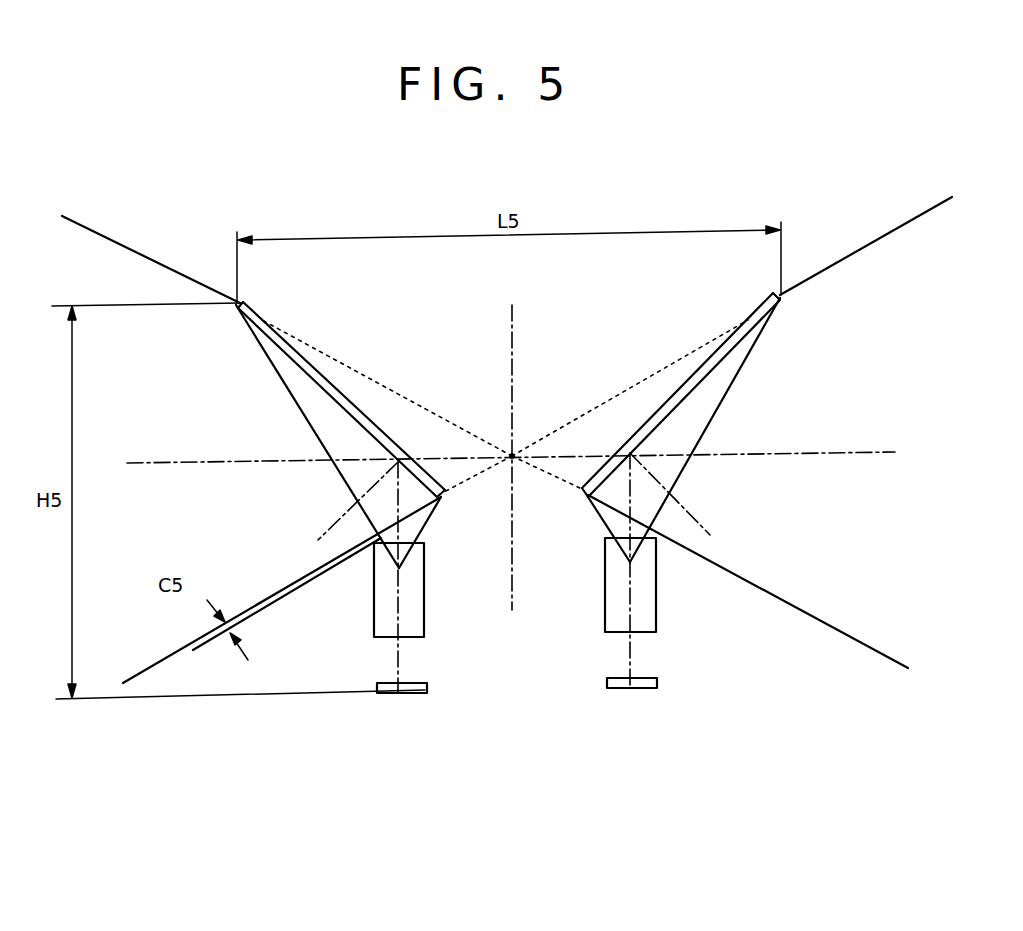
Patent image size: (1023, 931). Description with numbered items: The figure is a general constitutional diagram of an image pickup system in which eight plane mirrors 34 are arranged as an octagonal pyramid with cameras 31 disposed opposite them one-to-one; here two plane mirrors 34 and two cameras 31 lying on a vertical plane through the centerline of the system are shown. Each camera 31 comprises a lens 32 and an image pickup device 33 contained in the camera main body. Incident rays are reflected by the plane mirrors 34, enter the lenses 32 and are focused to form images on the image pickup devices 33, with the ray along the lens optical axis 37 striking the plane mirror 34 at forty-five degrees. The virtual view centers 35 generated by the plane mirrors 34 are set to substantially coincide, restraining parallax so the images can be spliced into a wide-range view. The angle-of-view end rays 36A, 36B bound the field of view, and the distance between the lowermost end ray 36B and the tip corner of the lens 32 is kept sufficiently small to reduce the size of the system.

The camera 31 is at (516, 615).
The lens 32 is at (375, 607).
The image pickup device 33 is at (516, 672).
The plane mirror 34 is at (297, 345).
The virtual view center 35 is at (512, 456).
The angle-of-view end ray 36A is at (133, 245).
The angle-of-view end ray 36B is at (172, 655).
The lens optical axis 37 is at (634, 500).